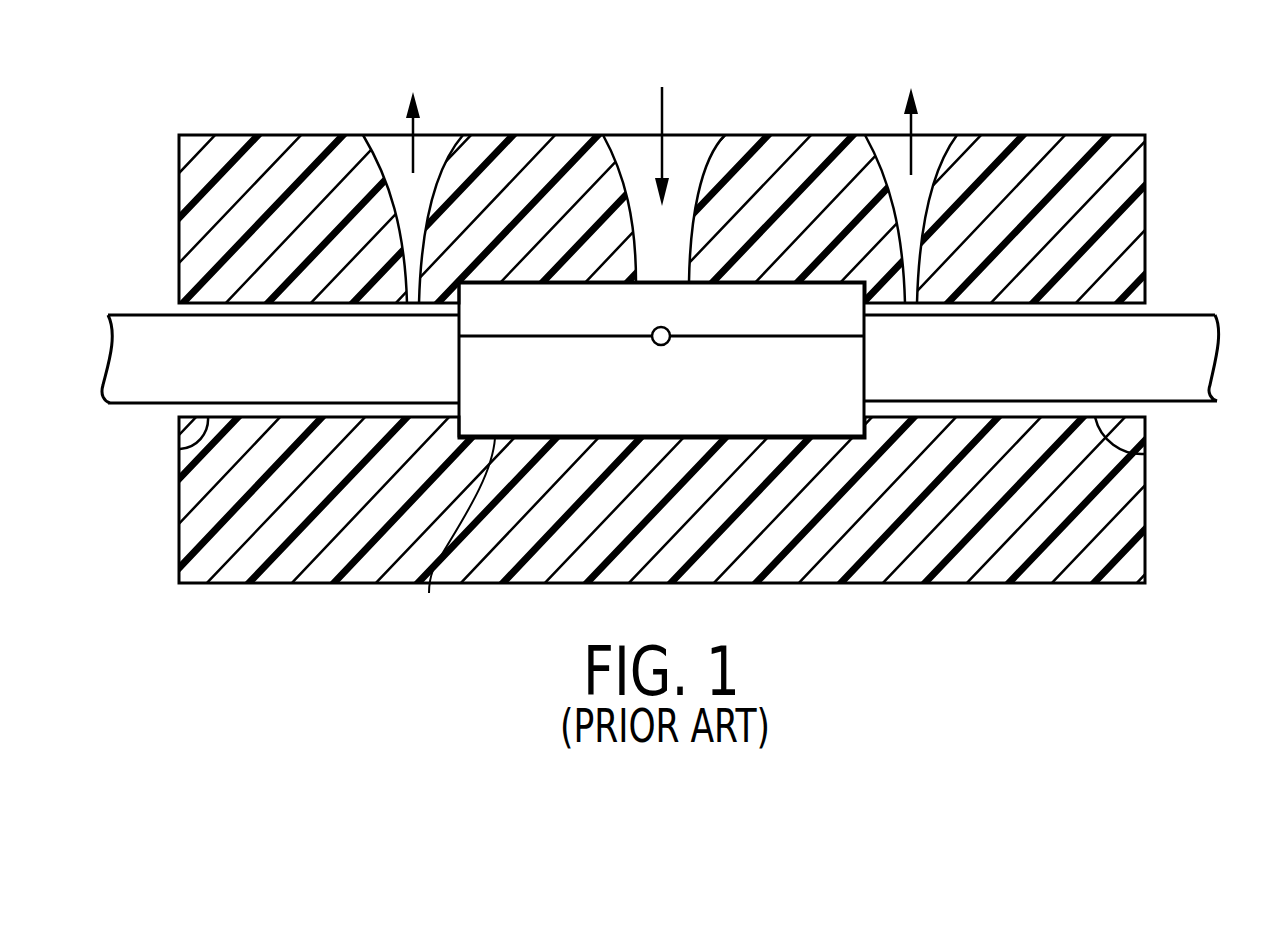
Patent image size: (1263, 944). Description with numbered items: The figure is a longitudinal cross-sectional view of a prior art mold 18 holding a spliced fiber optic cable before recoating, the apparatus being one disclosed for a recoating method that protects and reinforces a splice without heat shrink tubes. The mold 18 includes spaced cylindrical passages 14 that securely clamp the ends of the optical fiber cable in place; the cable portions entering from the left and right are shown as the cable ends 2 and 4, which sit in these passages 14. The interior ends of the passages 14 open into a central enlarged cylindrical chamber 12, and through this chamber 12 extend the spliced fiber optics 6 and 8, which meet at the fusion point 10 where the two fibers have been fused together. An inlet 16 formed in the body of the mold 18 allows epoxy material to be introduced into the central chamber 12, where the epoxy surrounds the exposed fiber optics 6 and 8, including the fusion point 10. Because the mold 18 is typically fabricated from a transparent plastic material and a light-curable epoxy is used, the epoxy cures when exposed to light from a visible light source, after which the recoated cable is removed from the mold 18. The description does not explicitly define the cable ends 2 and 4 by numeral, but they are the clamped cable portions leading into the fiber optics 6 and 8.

The first optical fiber 2 is at (153, 315).
The second optical fiber 4 is at (1178, 315).
The spliced fiber optic 6 is at (522, 337).
The spliced fiber optic 8 is at (760, 337).
The fusion point 10 is at (662, 346).
The central enlarged cylindrical chamber 12 is at (429, 593).
The cylindrical passage 14 is at (1140, 455).
The inlet 16 is at (660, 110).
The mold 18 is at (1165, 205).